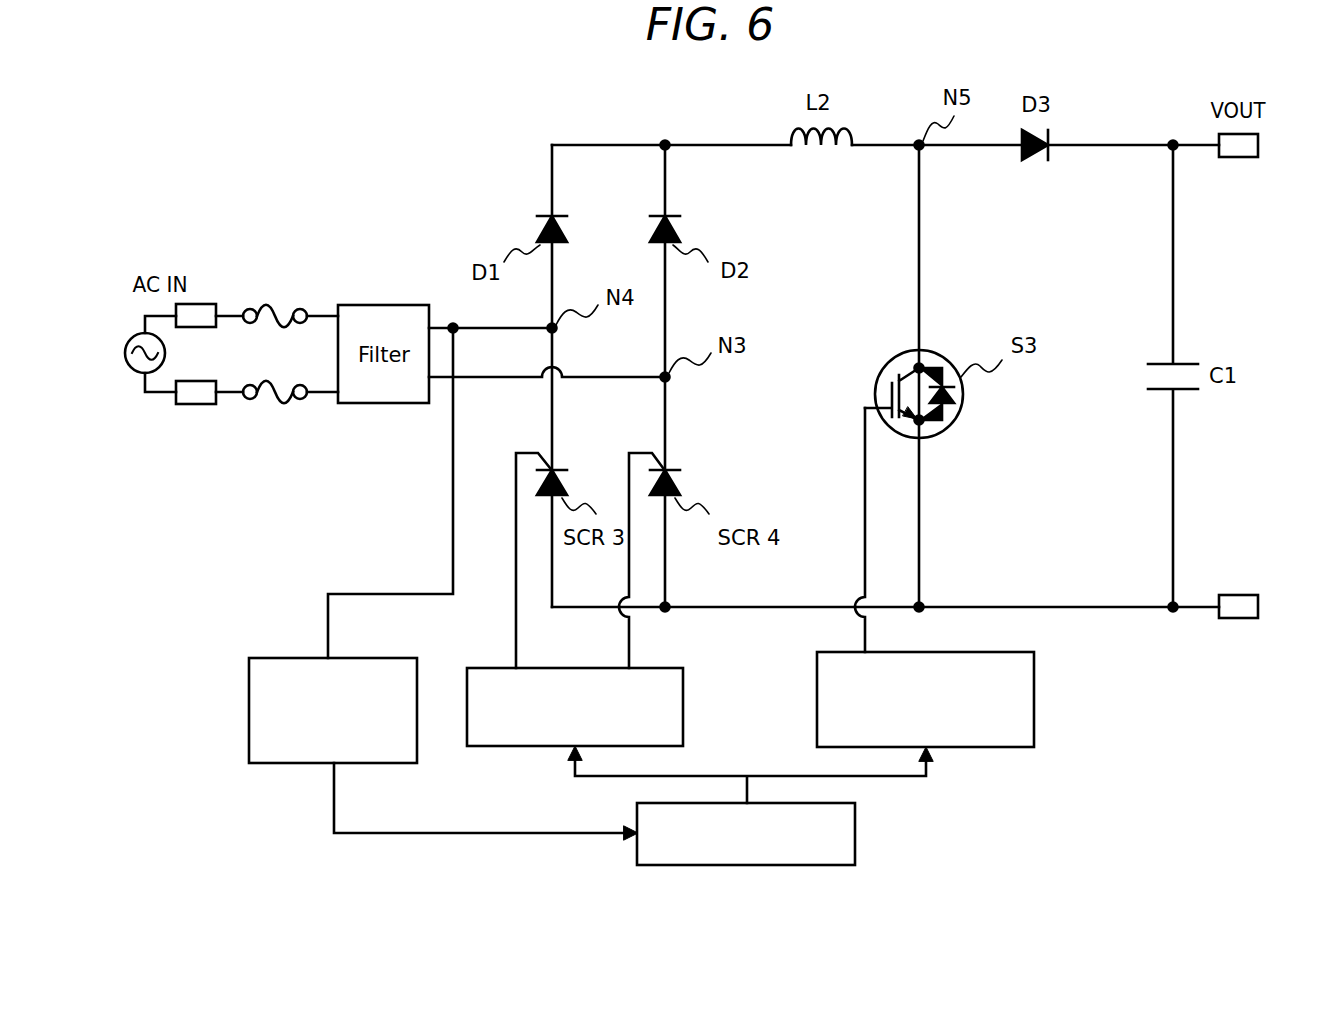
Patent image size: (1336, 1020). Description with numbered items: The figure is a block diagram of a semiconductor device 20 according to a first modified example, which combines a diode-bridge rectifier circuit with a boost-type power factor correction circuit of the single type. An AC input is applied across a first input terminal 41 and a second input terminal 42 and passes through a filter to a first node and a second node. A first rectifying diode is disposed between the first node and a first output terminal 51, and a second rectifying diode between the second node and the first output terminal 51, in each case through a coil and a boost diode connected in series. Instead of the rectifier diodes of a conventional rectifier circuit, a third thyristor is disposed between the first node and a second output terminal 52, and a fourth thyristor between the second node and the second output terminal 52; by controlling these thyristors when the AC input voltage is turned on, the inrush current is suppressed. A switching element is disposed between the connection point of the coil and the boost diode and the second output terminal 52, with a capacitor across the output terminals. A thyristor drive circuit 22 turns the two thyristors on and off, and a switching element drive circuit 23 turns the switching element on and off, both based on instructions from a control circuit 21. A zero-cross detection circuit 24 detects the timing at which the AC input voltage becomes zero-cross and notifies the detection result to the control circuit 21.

The semiconductor device 20 is at (455, 177).
The control circuit 21 is at (855, 838).
The thyristor drive circuit 22 is at (683, 700).
The switching element drive circuit 23 is at (1034, 697).
The zero-cross detection circuit 24 is at (358, 658).
The first input terminal 41 is at (205, 304).
The second input terminal 42 is at (198, 404).
The first output terminal 51 is at (1243, 157).
The second output terminal 52 is at (1243, 618).